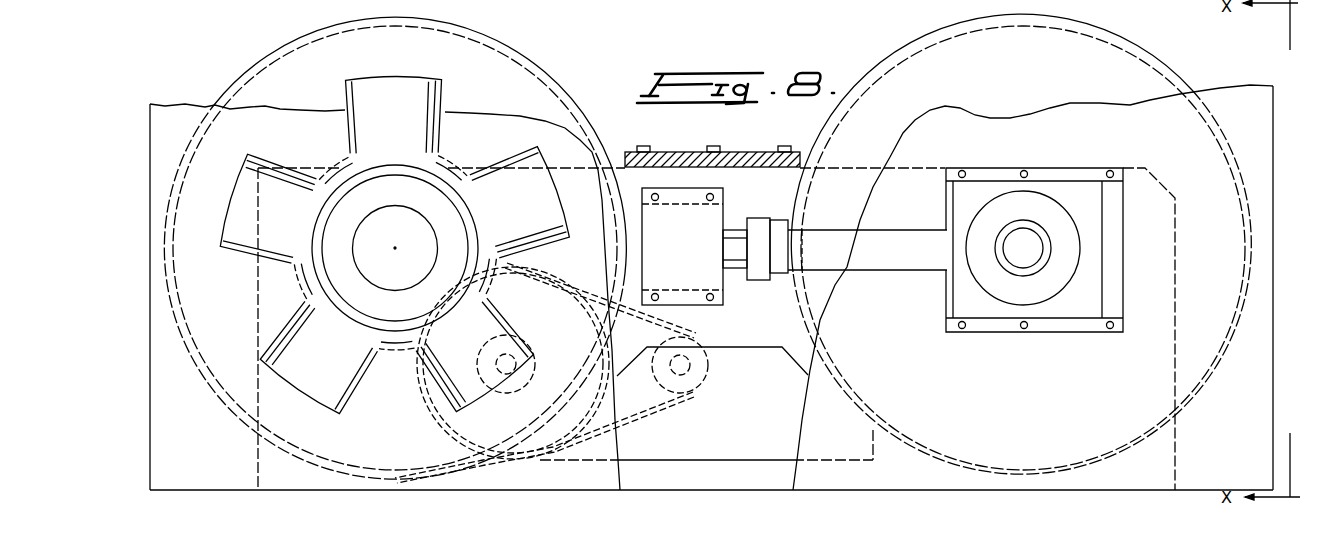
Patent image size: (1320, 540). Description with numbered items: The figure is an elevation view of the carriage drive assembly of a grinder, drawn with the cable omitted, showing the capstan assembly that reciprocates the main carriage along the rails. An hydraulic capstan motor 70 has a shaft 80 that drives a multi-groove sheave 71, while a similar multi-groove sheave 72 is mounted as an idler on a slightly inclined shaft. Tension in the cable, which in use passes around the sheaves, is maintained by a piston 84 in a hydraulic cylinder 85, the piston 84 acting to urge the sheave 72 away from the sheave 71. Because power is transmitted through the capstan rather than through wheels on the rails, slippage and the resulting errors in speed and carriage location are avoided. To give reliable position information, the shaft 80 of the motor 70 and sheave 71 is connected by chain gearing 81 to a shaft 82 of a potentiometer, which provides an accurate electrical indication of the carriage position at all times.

The hydraulic capstan motor 70 is at (412, 92).
The multi-groove sheave 71 is at (240, 78).
The multi-groove sheave 72 is at (1153, 54).
The shaft 80 is at (368, 258).
The chain gearing 81 is at (522, 266).
The shaft 82 is at (685, 368).
The piston 84 is at (728, 230).
The hydraulic cylinder 85 is at (700, 272).